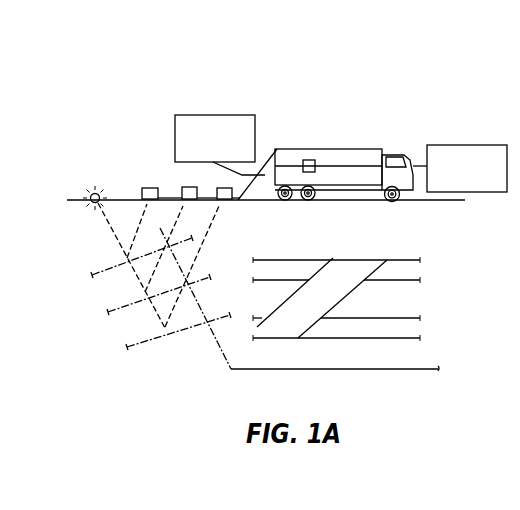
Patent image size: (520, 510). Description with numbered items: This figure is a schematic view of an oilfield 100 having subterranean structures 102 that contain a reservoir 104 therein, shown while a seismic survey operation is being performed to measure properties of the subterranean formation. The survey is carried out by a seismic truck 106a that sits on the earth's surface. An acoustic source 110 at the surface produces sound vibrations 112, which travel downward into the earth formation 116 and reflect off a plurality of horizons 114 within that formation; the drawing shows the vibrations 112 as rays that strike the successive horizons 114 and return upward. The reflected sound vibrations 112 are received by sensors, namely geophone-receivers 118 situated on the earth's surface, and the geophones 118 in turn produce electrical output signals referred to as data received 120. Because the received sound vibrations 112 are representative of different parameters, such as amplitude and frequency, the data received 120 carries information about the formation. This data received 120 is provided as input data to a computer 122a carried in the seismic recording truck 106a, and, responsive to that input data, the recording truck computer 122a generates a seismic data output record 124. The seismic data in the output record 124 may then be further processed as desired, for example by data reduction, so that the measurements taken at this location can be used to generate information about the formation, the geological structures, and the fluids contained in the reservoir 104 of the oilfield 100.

The oilfield 100 is at (455, 125).
The subterranean structures 102 is at (353, 285).
The reservoir 104 is at (404, 308).
The seismic truck 106a is at (351, 164).
The acoustic source 110 is at (91, 186).
The sound vibrations 112 is at (138, 229).
The horizons 114 is at (104, 268).
The earth formation 116 is at (214, 340).
The geophone-receivers 118 is at (217, 190).
The data received 120 is at (198, 115).
The computer 122a is at (314, 160).
The seismic data output record 124 is at (476, 146).